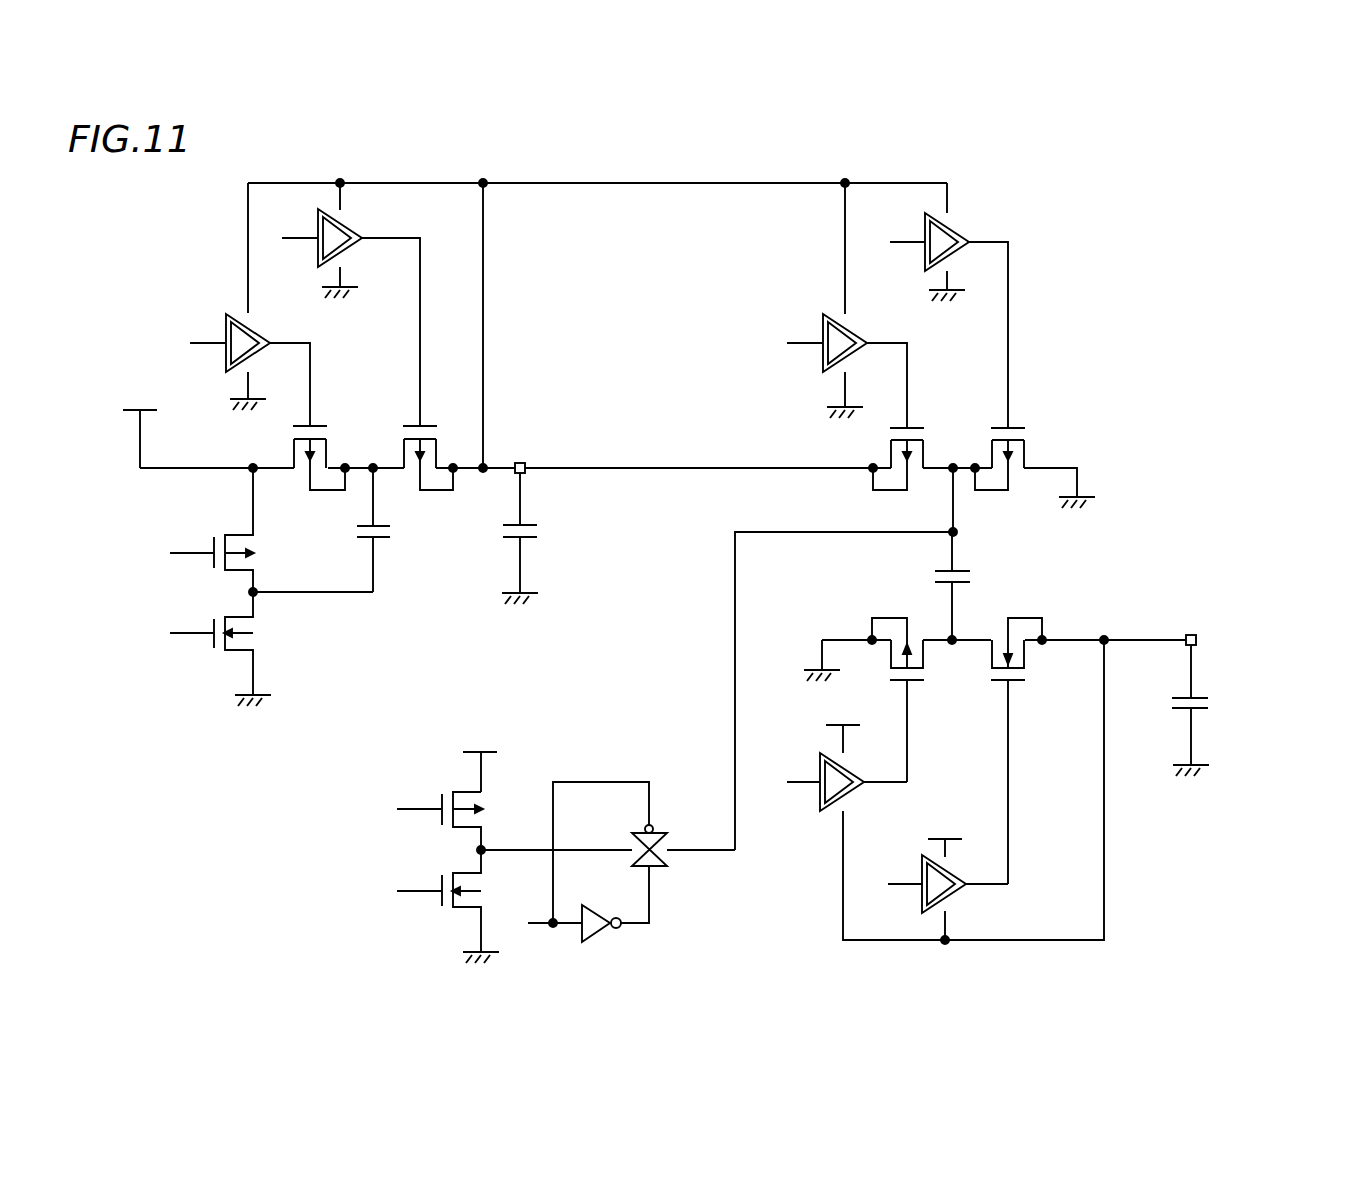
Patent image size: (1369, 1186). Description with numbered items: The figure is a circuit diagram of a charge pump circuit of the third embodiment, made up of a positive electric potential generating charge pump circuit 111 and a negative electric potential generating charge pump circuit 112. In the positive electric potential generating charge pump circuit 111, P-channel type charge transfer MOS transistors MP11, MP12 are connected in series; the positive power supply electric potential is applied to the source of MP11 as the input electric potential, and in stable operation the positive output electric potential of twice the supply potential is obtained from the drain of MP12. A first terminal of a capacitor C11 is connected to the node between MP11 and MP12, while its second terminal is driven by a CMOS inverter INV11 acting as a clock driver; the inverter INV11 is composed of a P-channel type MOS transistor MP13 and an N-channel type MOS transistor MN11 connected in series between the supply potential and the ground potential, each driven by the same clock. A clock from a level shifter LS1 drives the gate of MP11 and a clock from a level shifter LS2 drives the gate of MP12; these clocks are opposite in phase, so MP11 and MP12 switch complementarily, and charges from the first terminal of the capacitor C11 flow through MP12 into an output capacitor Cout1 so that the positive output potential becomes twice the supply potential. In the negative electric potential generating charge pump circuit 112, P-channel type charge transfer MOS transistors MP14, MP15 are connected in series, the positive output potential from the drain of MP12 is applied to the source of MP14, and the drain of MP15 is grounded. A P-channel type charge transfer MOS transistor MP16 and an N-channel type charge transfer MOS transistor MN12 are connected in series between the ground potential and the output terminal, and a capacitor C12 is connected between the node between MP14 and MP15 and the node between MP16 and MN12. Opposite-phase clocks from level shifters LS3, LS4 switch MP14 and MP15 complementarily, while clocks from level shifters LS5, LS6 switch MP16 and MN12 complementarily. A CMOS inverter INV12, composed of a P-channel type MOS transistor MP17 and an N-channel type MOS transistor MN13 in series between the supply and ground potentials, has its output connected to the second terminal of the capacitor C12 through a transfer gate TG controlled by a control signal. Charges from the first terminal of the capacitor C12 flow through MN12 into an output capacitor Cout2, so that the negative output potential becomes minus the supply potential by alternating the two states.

The positive electric potential generating charge pump circuit 111 is at (455, 151).
The negative electric potential generating charge pump circuit 112 is at (738, 958).
The level shifter LS1 is at (225, 328).
The level shifter LS2 is at (354, 249).
The level shifter LS3 is at (822, 328).
The level shifter LS4 is at (958, 222).
The level shifter LS5 is at (818, 798).
The level shifter LS6 is at (955, 900).
The P-channel type charge transfer MOS transistor MP11 is at (290, 458).
The P-channel type charge transfer MOS transistor MP12 is at (438, 473).
The P-channel type MOS transistor MP13 is at (207, 530).
The P-channel type charge transfer MOS transistor MP14 is at (897, 474).
The P-channel type charge transfer MOS transistor MP15 is at (1010, 474).
The P-channel type charge transfer MOS transistor MP16 is at (921, 700).
The P-channel type MOS transistor MP17 is at (433, 821).
The N-channel type MOS transistor MN11 is at (207, 643).
The N-channel type charge transfer MOS transistor MN12 is at (1033, 751).
The N-channel type MOS transistor MN13 is at (435, 901).
The capacitor C11 is at (398, 531).
The capacitor C12 is at (975, 578).
The output capacitor Cout1 is at (541, 531).
The output capacitor Cout2 is at (1216, 704).
The CMOS inverter INV11 is at (185, 683).
The CMOS inverter INV12 is at (420, 922).
The transfer gate TG is at (665, 885).